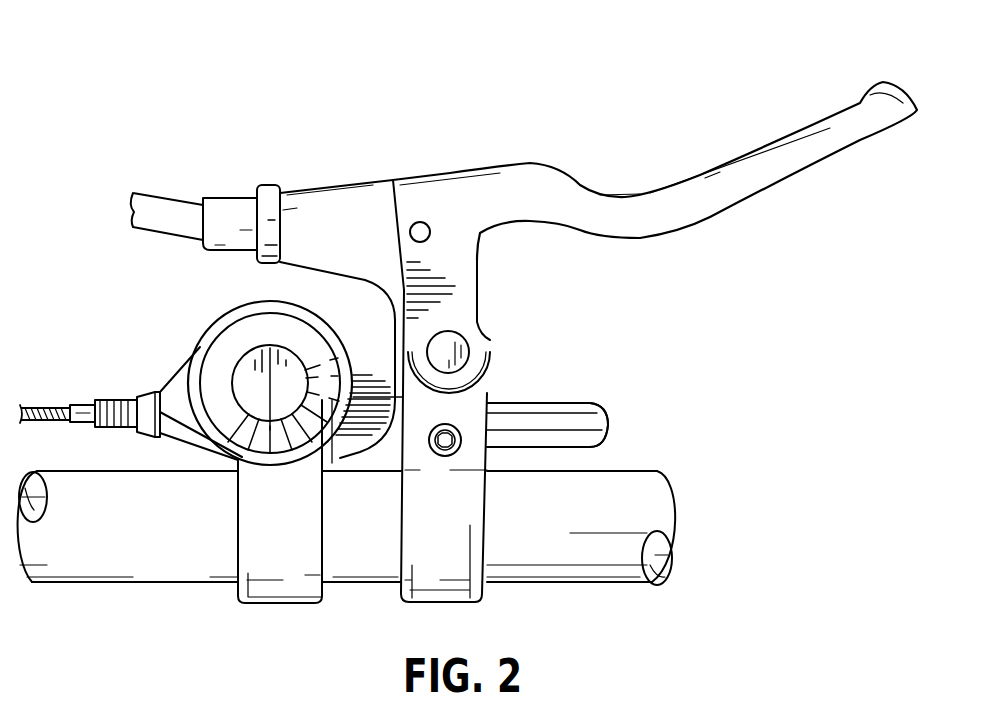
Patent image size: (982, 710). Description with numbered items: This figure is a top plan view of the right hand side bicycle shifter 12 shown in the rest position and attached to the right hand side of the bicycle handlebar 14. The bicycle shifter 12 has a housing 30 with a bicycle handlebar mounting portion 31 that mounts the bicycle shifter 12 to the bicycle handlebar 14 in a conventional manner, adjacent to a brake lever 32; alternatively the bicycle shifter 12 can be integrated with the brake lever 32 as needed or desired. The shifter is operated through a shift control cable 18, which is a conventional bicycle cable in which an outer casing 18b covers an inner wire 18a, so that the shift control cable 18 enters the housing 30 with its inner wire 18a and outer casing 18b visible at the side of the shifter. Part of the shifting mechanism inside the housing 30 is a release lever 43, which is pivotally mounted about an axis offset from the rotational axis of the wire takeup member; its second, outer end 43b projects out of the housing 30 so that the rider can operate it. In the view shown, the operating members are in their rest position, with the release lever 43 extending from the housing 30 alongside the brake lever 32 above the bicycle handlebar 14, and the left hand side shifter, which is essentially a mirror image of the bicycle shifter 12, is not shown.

The bicycle shifter 12 is at (193, 320).
The bicycle handlebar 14 is at (97, 585).
The shift control cable 18 is at (90, 369).
The inner wire 18a is at (46, 384).
The outer casing 18b is at (82, 407).
The housing 30 is at (333, 317).
The bicycle handlebar mounting portion 31 is at (287, 588).
The brake lever 32 is at (452, 300).
The release lever 43 is at (592, 411).
The second end 43b is at (605, 437).